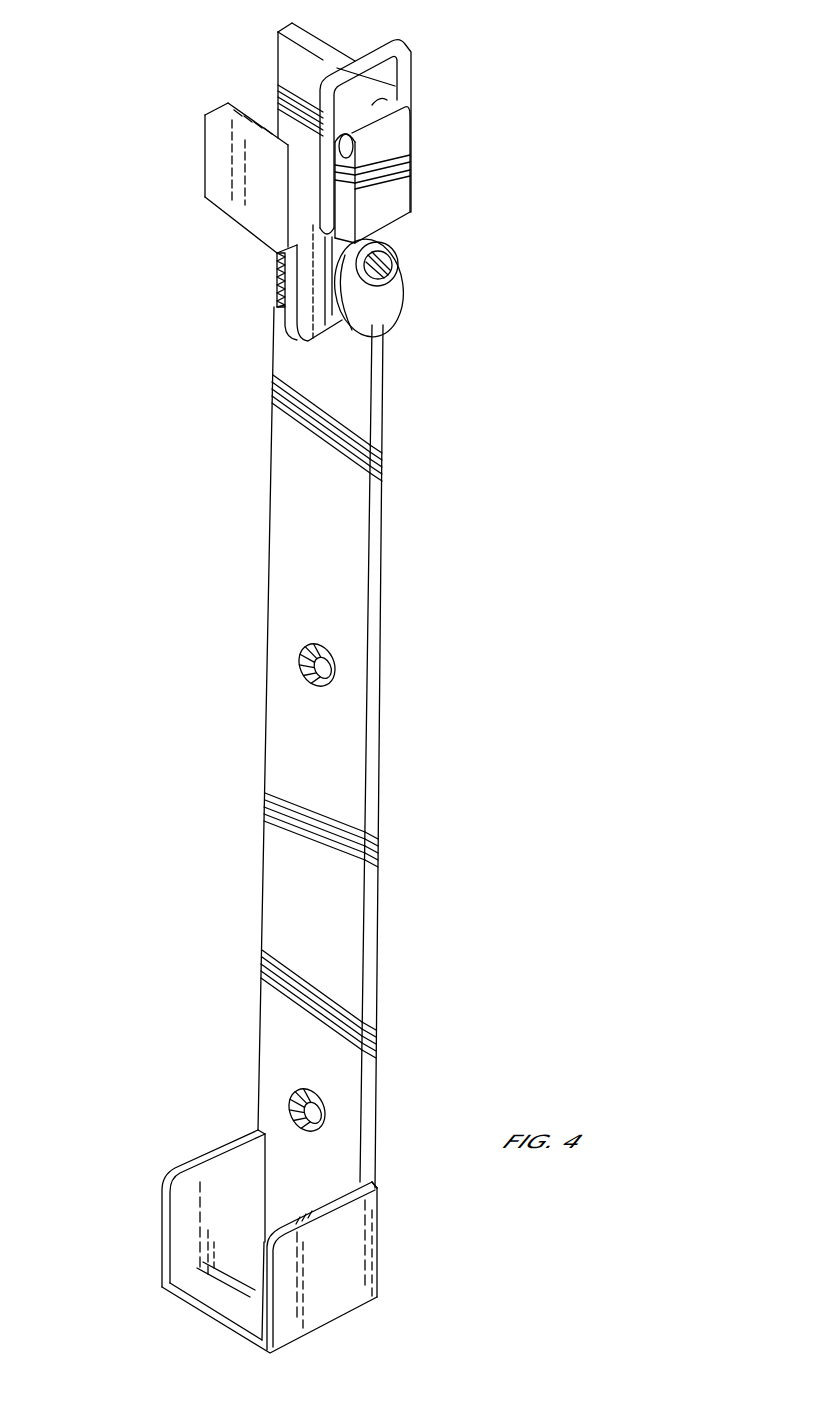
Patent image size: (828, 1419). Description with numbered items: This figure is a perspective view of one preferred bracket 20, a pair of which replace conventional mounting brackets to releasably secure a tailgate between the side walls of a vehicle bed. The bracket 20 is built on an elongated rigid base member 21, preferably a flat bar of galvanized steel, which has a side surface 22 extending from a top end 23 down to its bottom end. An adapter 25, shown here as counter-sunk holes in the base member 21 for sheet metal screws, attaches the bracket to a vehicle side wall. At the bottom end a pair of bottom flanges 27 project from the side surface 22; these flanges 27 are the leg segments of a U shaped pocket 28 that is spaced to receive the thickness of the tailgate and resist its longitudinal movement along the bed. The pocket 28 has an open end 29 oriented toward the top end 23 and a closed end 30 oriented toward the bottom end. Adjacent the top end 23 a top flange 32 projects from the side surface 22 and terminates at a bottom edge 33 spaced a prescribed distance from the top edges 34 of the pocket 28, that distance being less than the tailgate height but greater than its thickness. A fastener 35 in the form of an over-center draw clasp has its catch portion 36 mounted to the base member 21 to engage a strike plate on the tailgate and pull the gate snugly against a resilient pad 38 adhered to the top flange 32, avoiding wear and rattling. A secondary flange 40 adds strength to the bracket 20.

The bracket 20 is at (303, 747).
The base member 21 is at (375, 598).
The side surface 22 is at (303, 900).
The top end 23 is at (303, 32).
The adapter 25 is at (323, 683).
The bottom flanges 27 is at (223, 1207).
The U shaped pocket 28 is at (264, 1217).
The open end 29 is at (187, 1232).
The closed end 30 is at (218, 1310).
The top flange 32 is at (333, 323).
The bottom edge 33 is at (300, 337).
The top edges 34 is at (247, 1128).
The fastener 35 is at (440, 162).
The catch portion 36 is at (407, 50).
The resilient pad 38 is at (275, 285).
The secondary flange 40 is at (218, 175).